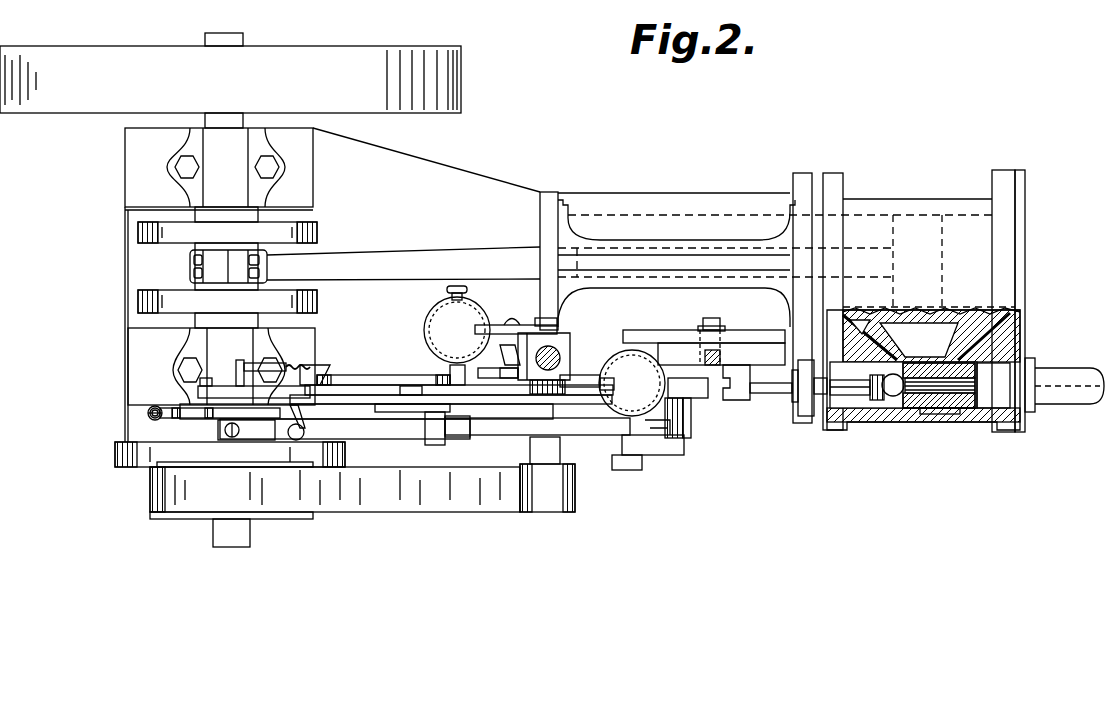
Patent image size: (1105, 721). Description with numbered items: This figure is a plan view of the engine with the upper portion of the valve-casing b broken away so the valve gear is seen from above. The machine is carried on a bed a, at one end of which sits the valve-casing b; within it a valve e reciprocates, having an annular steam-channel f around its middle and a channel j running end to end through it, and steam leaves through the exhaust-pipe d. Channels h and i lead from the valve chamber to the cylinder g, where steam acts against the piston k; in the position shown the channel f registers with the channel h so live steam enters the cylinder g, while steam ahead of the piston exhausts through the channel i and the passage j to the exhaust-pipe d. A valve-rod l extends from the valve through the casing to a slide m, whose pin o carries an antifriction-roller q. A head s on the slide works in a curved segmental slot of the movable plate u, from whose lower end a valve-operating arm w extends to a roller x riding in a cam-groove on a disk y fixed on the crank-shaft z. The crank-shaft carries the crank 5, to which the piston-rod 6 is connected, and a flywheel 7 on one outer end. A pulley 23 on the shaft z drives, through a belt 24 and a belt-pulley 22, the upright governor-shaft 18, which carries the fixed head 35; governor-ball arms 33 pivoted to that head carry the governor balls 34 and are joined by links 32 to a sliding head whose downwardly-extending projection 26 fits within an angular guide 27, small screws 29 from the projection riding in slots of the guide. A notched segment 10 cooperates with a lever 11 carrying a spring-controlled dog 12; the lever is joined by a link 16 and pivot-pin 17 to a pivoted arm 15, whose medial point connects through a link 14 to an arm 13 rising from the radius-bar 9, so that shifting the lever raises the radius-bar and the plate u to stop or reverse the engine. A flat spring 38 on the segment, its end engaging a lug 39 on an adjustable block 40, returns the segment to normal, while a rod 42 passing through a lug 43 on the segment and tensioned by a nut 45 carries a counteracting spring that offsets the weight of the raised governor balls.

The flywheel 7 is at (445, 78).
The crank 5 is at (318, 229).
The piston-rod 6 is at (470, 249).
The bed a is at (492, 176).
The piston k is at (925, 230).
The cylinder g is at (977, 275).
The channel h is at (1015, 322).
The channel i is at (850, 330).
The valve e is at (890, 397).
The valve-casing b is at (920, 408).
The channel j is at (955, 393).
The annular steam-channel f is at (935, 414).
The exhaust-pipe d is at (1075, 404).
The valve-rod l is at (768, 393).
The slide m is at (740, 400).
The antifriction-roller q is at (698, 350).
The pin o is at (698, 318).
The movable plate u is at (700, 460).
The head s is at (693, 410).
The valve-operating arm w is at (605, 430).
The governor balls 34 is at (424, 328).
The links 32 is at (508, 312).
The governor-ball arms 33 is at (530, 322).
The fixed head 35 is at (570, 340).
The upright shaft 18 is at (550, 353).
The downwardly-extending projection 26 is at (590, 385).
The angular guide 27 is at (518, 345).
The pivoted arm 15 is at (505, 362).
The small screws 29 is at (509, 371).
The lever 11 is at (222, 386).
The spring-controlled dog 12 is at (260, 362).
The arm 13 is at (340, 375).
The link 14 is at (382, 395).
The adjustable block 40 is at (410, 386).
The link 16 is at (345, 404).
The flat spring 38 is at (375, 439).
The lug 39 is at (430, 445).
The radius-bar 9 is at (505, 435).
The pivot-pin 17 is at (563, 445).
The roller x is at (290, 440).
The notched segment 10 is at (190, 418).
The nut 45 is at (150, 408).
The lug 43 is at (160, 405).
The rod 42 is at (147, 413).
The disk y is at (115, 455).
The belt 24 is at (440, 512).
The pulley 23 is at (175, 519).
The crank-shaft z is at (240, 547).
The belt-pulley 22 is at (555, 512).